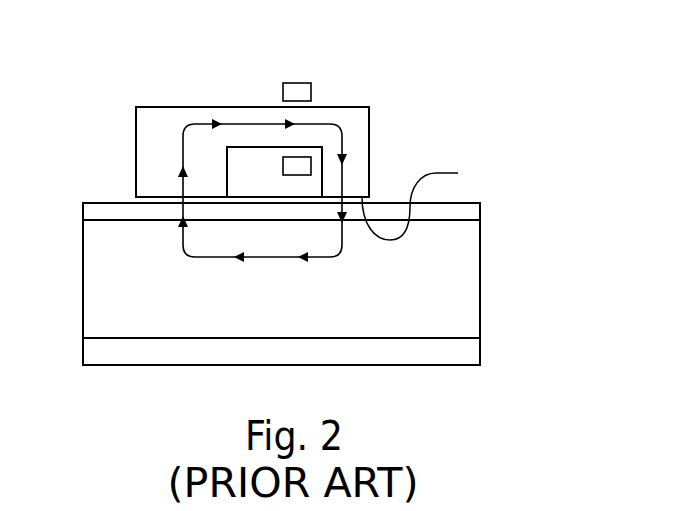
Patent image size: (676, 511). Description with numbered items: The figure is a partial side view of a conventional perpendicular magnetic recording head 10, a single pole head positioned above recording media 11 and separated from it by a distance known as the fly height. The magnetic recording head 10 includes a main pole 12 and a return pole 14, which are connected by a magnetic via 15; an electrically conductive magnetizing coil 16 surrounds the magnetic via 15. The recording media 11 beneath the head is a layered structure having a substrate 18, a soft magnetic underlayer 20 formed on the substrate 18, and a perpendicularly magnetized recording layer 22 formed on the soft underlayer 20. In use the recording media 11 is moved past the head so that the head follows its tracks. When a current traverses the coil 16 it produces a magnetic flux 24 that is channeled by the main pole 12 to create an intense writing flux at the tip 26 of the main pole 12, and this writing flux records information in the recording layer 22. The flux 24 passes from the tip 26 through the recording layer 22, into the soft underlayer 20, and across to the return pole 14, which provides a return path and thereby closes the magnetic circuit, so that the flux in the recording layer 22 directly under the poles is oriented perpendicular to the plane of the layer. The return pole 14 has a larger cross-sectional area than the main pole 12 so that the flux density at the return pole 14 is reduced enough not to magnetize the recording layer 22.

The magnetic recording head 10 is at (304, 136).
The recording media 11 is at (537, 292).
The main pole 12 is at (363, 167).
The return pole 14 is at (150, 117).
The magnetic via 15 is at (253, 113).
The magnetizing coil 16 is at (303, 87).
The substrate 18 is at (475, 354).
The soft magnetic underlayer 20 is at (426, 306).
The recording layer 22 is at (480, 212).
The magnetic flux 24 is at (342, 125).
The tip of the main pole 26 is at (427, 200).